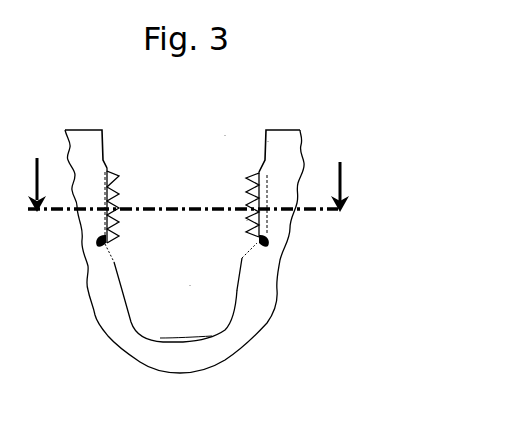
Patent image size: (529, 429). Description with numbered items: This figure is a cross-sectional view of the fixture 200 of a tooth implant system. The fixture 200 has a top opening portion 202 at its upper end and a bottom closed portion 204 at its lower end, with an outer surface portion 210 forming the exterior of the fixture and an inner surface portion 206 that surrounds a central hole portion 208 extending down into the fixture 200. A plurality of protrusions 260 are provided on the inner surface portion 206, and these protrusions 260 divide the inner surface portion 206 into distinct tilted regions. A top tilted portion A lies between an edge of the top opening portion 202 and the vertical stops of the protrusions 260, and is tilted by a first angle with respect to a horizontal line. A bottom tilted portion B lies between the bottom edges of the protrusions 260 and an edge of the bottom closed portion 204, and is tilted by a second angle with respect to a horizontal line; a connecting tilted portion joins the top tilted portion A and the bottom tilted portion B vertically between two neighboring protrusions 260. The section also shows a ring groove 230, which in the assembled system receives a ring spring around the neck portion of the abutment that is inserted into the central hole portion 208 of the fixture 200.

The fixture 200 is at (391, 127).
The top opening portion 202 is at (225, 135).
The bottom closed portion 204 is at (178, 337).
The inner surface portion 206 is at (115, 250).
The central hole portion 208 is at (190, 285).
The outer surface portion 210 is at (278, 268).
The ring groove 230 is at (263, 162).
The protrusions 260 is at (247, 220).
The top tilted portion A is at (268, 141).
The bottom tilted portion B is at (237, 290).